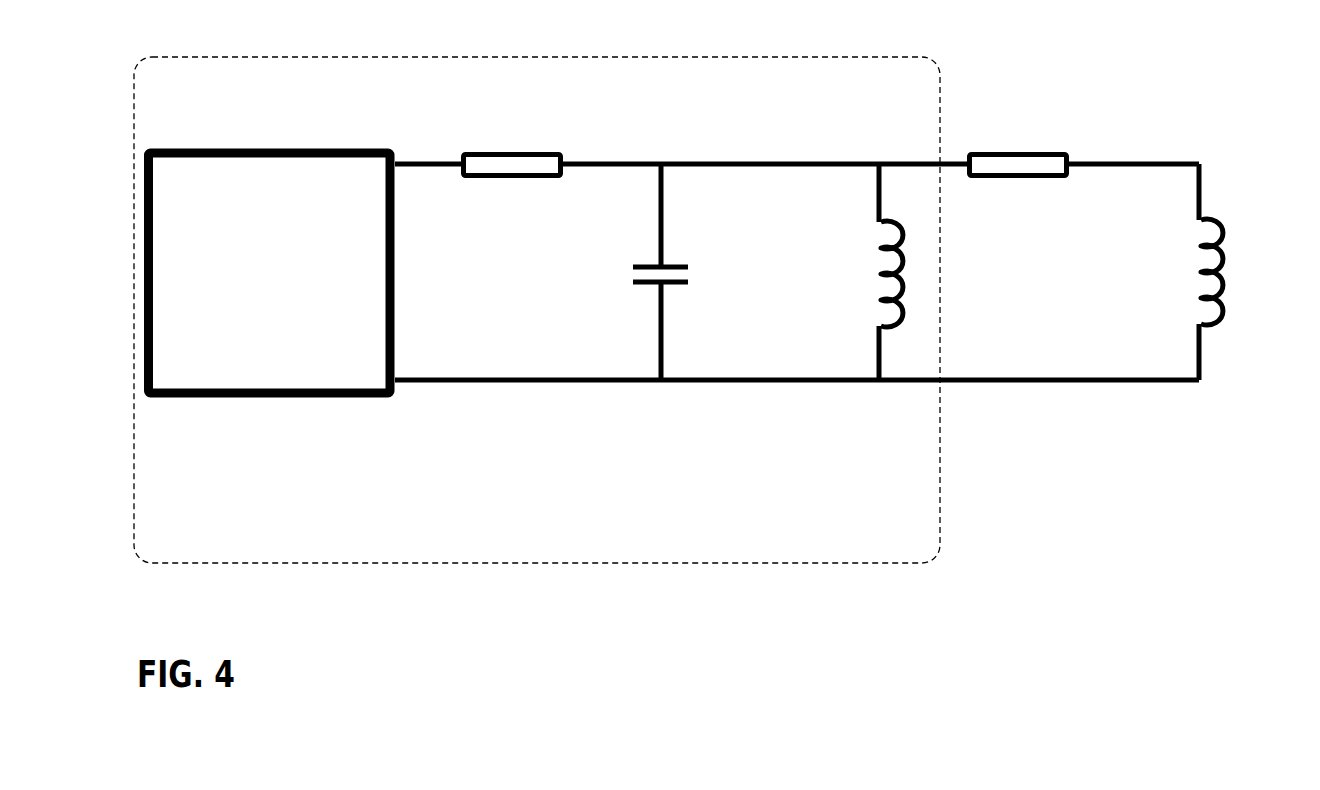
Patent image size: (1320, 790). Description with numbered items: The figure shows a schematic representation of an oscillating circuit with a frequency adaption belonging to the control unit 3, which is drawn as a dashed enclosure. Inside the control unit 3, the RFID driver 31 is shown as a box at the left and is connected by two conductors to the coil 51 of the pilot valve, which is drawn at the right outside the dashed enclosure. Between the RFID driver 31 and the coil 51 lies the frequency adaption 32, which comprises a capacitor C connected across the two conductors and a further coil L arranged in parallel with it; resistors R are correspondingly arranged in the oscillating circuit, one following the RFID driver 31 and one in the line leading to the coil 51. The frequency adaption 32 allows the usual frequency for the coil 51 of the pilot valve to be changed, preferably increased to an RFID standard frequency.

The control unit 3 is at (373, 564).
The RFID driver 31 is at (268, 359).
The frequency adaption 32 is at (732, 448).
The coil 51 is at (1215, 327).